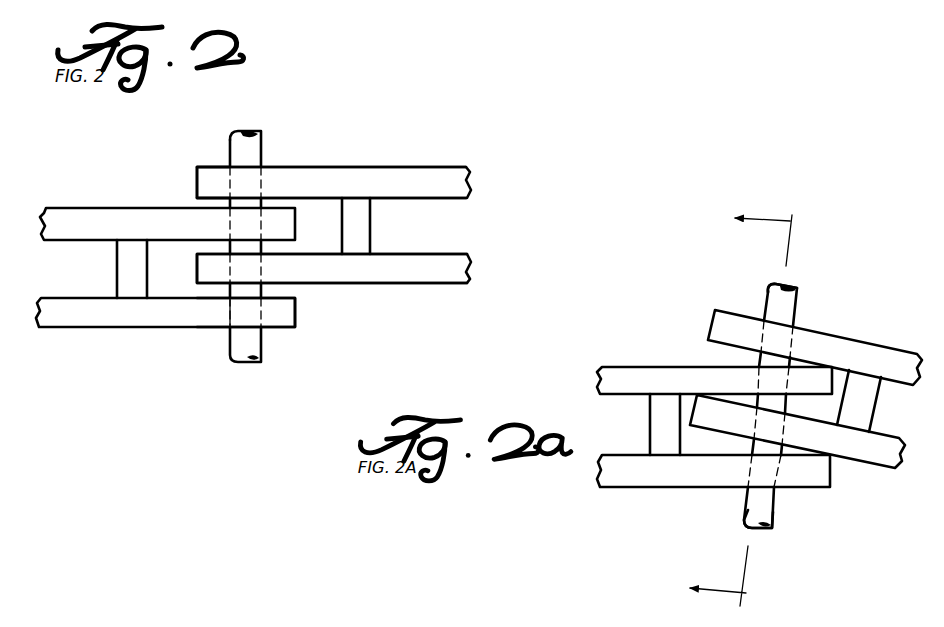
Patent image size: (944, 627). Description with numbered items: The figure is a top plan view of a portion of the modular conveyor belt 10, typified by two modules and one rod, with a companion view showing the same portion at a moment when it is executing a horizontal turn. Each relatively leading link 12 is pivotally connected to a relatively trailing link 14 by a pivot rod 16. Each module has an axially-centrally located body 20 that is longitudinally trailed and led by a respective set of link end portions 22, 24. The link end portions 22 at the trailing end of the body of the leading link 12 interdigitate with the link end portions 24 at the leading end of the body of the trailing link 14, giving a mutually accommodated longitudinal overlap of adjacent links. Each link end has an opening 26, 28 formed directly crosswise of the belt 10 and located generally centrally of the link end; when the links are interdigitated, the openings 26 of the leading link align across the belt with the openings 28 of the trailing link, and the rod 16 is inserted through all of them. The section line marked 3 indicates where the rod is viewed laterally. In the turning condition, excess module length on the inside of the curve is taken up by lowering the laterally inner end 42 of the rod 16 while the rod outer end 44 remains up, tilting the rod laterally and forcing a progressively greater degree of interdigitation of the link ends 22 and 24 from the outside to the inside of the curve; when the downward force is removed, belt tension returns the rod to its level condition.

In FIG. 2A, the section line 3- 3 is at (725, 407).
In FIG. 2, the conveyor belt 10 is at (234, 124).
In FIG. 2A, the conveyor belt 10 is at (646, 337).
In FIG. 2, the leading link 12 is at (440, 284).
In FIG. 2A, the leading link 12 is at (897, 476).
In FIG. 2, the trailing link 14 is at (62, 327).
In FIG. 2A, the trailing link 14 is at (632, 498).
In FIG. 2, the pivot rod 16 is at (257, 363).
In FIG. 2A, the pivot rod 16 is at (767, 505).
In FIG. 2, the body 20 is at (402, 167).
In FIG. 2, the trailing link end portions 22 is at (197, 183).
In FIG. 2, the leading link end portions 24 is at (295, 316).
In FIG. 2, the opening 26 is at (262, 266).
In FIG. 2, the opening 28 is at (230, 312).
In FIG. 2A, the rod inner end 42 is at (745, 528).
In FIG. 2A, the rod outer end 44 is at (799, 290).